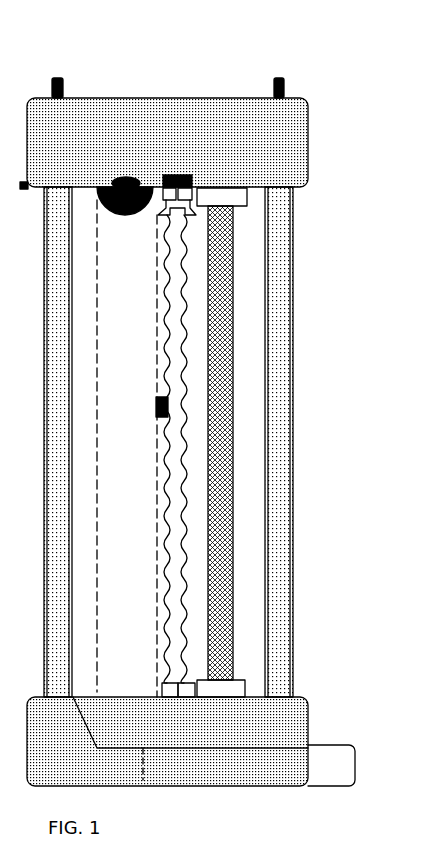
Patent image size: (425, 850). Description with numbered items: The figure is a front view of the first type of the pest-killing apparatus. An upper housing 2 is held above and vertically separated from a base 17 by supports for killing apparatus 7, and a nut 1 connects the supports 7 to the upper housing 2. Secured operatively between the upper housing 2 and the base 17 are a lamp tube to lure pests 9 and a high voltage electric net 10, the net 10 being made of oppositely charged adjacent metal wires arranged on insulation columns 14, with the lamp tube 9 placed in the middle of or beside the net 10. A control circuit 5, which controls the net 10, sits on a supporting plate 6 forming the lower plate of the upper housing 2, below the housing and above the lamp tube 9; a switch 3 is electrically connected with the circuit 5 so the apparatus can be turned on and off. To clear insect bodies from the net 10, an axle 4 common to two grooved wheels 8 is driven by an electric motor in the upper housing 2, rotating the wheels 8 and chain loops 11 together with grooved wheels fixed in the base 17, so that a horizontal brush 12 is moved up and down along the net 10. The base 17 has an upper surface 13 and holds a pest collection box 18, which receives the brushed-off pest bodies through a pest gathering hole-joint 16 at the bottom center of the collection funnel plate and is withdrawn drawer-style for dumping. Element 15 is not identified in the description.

The nut 1 is at (64, 92).
The upper housing 2 is at (205, 106).
The switch 3 is at (201, 122).
The axle 4 is at (240, 150).
The control circuit 5 is at (273, 153).
The supporting plate 6 is at (273, 174).
The support for killing apparatus 7 is at (294, 199).
The grooved wheels 8 is at (270, 217).
The lamp tube to lure pests 9 is at (234, 279).
The high voltage electric net 10 is at (186, 321).
The chain loops 11 is at (158, 367).
The horizontal brush 12 is at (168, 408).
The upper surface 13 is at (231, 448).
The insulation columns 14 is at (272, 589).
The lower cap 15 is at (290, 611).
The pest gathering hole-joint 16 is at (228, 676).
The base 17 is at (205, 702).
The pest collection box 18 is at (345, 725).